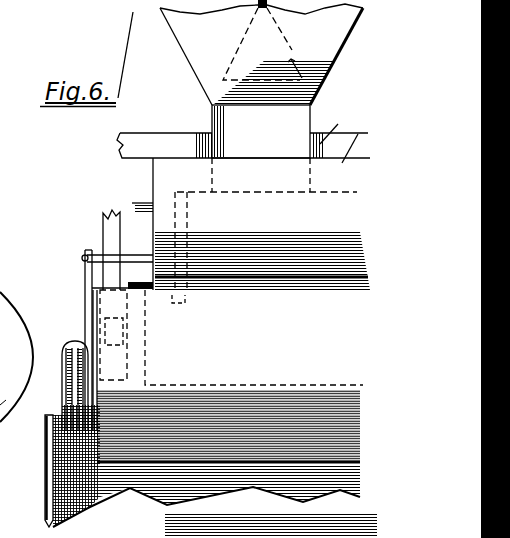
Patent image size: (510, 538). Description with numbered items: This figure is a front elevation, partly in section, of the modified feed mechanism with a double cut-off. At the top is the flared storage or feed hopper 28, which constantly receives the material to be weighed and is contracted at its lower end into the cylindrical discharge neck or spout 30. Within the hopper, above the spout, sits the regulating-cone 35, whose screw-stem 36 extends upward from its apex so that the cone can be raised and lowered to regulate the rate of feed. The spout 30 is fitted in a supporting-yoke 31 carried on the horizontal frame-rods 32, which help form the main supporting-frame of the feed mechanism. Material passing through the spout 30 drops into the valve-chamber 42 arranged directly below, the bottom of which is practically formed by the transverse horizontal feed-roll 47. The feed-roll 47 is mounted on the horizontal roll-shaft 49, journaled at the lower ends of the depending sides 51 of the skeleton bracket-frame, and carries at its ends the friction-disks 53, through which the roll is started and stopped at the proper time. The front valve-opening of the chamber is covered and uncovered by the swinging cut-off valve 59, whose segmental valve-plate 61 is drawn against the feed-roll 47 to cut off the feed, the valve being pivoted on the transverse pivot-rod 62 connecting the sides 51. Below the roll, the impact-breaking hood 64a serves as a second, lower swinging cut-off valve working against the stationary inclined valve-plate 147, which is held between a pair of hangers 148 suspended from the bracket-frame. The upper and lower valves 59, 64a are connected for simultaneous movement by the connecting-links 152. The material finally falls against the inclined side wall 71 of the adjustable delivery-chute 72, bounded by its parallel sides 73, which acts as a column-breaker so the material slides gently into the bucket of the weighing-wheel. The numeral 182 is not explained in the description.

The storage or feed hopper 28 is at (261, 54).
The screw-stem 36 is at (257, 4).
The regulating-cone 35 is at (303, 46).
The discharge neck or spout 30 is at (260, 131).
The supporting-yoke 31 is at (339, 125).
The segmental valve-plate 61 is at (358, 140).
The frame-rods 32 is at (118, 153).
The valve-chamber 42 is at (177, 193).
The transverse pivot-rod 62 is at (135, 206).
The swinging cut-off valve 59 is at (262, 245).
The depending sides of skeleton bracket-frame 51 is at (104, 228).
The rod 182 is at (85, 284).
The feed-roll 47 is at (147, 281).
The friction-disks 53 is at (143, 291).
The roll-shaft 49 is at (82, 324).
The connecting-links 152 is at (72, 346).
The impact-breaking hood 64a is at (232, 342).
The stationary inclined valve-plate 147 is at (138, 455).
The hangers 148 is at (62, 424).
The parallel sides of delivery-chute 73 is at (47, 496).
The inclined side wall 71 is at (90, 510).
The delivery-chute 72 is at (271, 508).